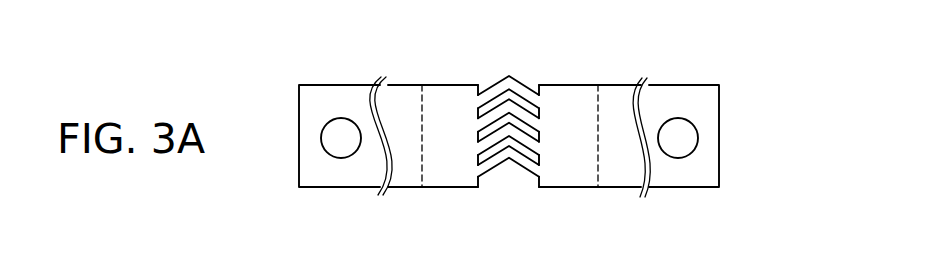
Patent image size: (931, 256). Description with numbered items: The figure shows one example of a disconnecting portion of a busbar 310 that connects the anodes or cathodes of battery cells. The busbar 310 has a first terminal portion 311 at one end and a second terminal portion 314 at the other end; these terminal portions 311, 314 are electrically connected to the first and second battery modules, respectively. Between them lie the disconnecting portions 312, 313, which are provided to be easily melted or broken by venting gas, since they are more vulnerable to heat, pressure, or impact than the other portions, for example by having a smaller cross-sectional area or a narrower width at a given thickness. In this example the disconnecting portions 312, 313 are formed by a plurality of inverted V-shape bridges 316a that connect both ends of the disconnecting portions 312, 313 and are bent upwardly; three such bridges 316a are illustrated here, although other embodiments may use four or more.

The busbar 310 is at (557, 140).
The first terminal portion 311 is at (343, 183).
The disconnecting portion 312 is at (422, 198).
The disconnecting portion 313 is at (598, 198).
The second terminal portion 314 is at (683, 183).
The inverted V-shape bridges 316a is at (526, 83).